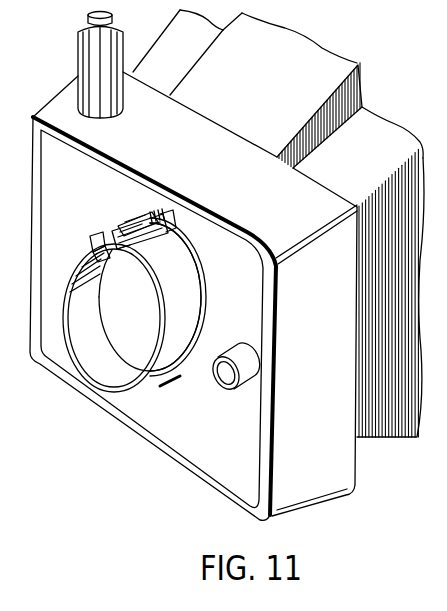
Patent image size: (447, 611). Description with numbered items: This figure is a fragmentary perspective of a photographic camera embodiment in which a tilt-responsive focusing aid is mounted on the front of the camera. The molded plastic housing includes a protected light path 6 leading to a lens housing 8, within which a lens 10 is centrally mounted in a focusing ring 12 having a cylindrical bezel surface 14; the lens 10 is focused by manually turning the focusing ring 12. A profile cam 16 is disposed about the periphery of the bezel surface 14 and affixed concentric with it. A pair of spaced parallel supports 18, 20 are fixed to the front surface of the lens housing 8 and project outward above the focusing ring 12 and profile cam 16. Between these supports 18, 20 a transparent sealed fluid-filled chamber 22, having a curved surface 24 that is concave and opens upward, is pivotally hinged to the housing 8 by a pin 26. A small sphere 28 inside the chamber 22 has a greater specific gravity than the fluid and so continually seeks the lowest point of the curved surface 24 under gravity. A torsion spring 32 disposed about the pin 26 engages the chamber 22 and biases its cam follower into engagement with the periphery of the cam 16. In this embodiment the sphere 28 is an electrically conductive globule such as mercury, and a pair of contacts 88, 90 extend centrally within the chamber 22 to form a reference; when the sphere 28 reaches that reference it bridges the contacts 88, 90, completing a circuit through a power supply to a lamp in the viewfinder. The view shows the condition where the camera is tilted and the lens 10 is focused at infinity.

The protected light path 6 is at (393, 269).
The lens housing 8 is at (324, 330).
The lens 10 is at (100, 394).
The focusing ring 12 is at (123, 395).
The cylindrical bezel surface 14 is at (180, 377).
The profile cam 16 is at (192, 305).
The support 18 is at (168, 222).
The support 20 is at (147, 215).
The fluid-filled chamber 22 is at (97, 258).
The curved surface 24 is at (137, 253).
The pin 26 is at (167, 237).
The sphere 28 is at (100, 245).
The torsion spring 32 is at (133, 253).
The contact 88 is at (135, 232).
The contact 90 is at (147, 222).